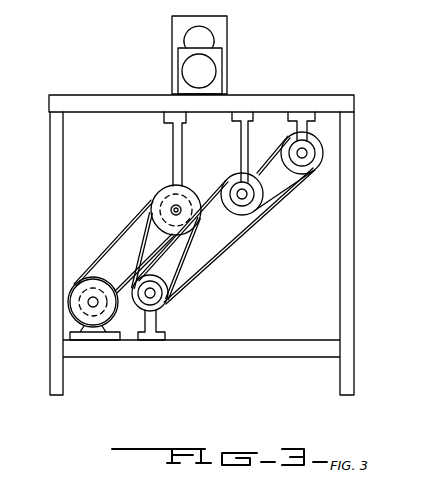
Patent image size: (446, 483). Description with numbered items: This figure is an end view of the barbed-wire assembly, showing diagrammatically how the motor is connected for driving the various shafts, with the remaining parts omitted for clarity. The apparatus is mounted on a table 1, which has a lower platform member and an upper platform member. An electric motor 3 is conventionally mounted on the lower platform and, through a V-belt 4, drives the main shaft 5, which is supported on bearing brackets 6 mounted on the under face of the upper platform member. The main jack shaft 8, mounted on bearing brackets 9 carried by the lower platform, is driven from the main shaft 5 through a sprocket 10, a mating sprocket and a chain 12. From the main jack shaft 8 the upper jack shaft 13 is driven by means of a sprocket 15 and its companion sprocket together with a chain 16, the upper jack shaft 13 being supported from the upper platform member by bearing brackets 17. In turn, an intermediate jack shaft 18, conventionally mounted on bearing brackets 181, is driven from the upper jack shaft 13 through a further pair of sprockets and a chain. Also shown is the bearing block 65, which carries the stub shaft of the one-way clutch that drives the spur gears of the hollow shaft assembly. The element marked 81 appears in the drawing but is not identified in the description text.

The table 1 is at (355, 232).
The electric motor 3 is at (94, 277).
The V-belt 4 is at (128, 233).
The main shaft 5 is at (167, 205).
The bearing brackets 6 is at (172, 150).
The main jack shaft 8 is at (155, 297).
The bearing brackets 9 is at (156, 322).
The sprocket 10 is at (183, 199).
The chain 12 is at (187, 257).
The upper jack shaft 13 is at (306, 154).
The sprocket 15 is at (315, 168).
The chain 16 is at (241, 236).
The bearing brackets 17 is at (308, 125).
The intermediate jack shaft 18 is at (237, 178).
The bearing brackets 181 is at (240, 131).
The bearing block 65 is at (222, 62).
The motor housing 81 is at (227, 33).